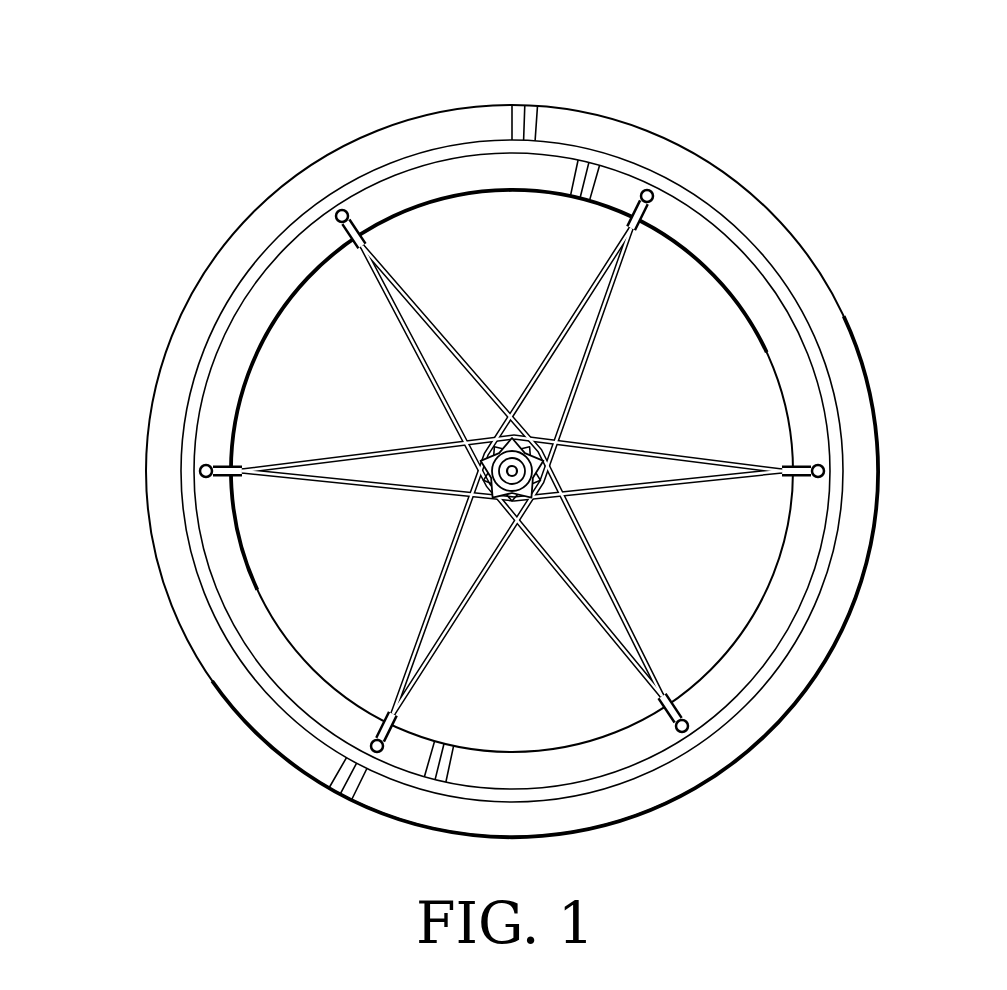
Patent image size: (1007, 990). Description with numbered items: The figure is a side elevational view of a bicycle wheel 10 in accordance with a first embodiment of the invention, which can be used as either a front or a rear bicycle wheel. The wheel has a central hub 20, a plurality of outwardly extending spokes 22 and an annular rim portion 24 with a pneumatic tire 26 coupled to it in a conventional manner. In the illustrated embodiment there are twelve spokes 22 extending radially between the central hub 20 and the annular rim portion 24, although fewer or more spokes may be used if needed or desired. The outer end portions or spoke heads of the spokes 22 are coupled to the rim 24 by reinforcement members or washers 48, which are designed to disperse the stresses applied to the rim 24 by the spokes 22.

The wheel 10 is at (464, 419).
The central hub 20 is at (453, 474).
The spokes 22 is at (419, 321).
The annular rim portion 24 is at (522, 202).
The pneumatic tire 26 is at (543, 91).
The reinforcement members or washers 48 is at (343, 208).